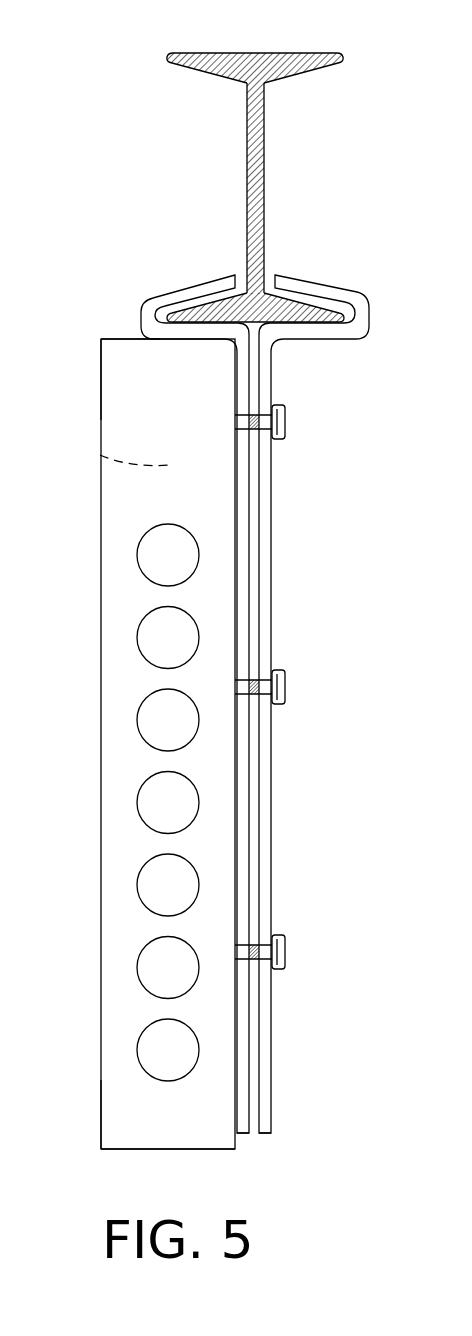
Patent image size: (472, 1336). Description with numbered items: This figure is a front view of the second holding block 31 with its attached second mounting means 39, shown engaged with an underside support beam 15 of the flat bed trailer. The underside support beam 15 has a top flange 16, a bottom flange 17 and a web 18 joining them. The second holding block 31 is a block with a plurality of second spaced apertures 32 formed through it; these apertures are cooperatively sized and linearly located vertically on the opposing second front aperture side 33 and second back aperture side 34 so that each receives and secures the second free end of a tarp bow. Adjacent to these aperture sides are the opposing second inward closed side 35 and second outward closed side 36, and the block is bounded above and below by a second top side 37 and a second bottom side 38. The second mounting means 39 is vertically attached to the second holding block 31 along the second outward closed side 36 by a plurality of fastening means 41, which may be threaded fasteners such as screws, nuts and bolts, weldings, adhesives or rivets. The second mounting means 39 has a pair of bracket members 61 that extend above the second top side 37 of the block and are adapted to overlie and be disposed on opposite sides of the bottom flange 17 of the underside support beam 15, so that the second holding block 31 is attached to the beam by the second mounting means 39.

The underside support beam 15 is at (186, 149).
The top flange 16 is at (274, 53).
The bottom flange 17 is at (239, 274).
The web 18 is at (265, 128).
The second holding block 31 is at (100, 403).
The second spaced apertures 32 is at (152, 562).
The second front aperture side 33 is at (122, 1105).
The second back aperture side 34 is at (100, 455).
The second inward closed side 35 is at (237, 1137).
The second outward closed side 36 is at (100, 357).
The second top side 37 is at (128, 337).
The second bottom side 38 is at (138, 1150).
The second mounting means 39 is at (308, 355).
The fastening means 41 is at (285, 424).
The bracket members 61 is at (182, 293).